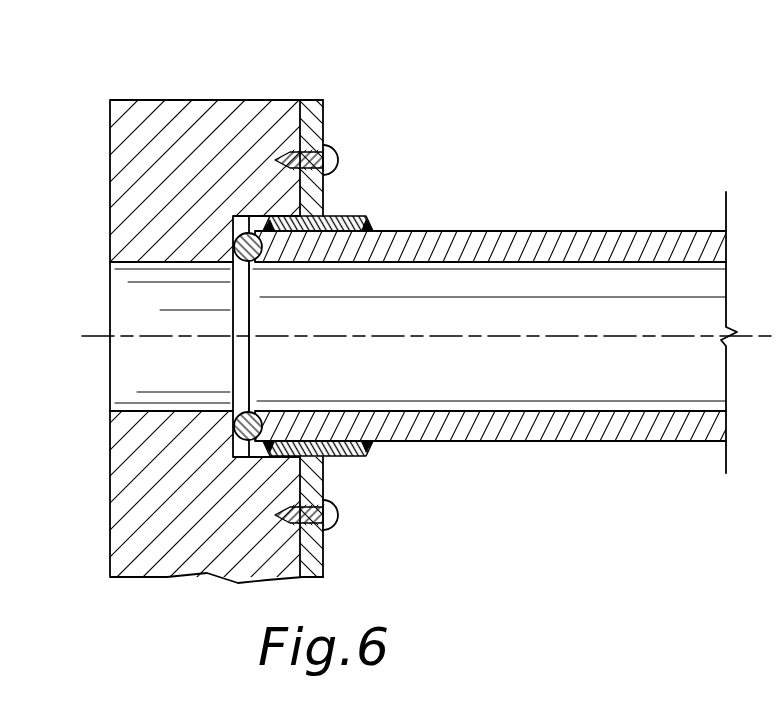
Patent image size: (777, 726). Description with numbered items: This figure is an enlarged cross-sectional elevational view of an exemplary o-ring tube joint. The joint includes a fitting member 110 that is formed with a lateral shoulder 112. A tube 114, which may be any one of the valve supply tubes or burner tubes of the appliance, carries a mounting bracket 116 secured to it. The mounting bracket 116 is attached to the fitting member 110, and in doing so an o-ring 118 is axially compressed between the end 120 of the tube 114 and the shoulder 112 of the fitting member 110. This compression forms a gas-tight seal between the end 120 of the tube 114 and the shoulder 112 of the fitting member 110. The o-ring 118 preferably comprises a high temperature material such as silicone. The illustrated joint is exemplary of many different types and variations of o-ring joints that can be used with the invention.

The fitting member 110 is at (173, 100).
The lateral shoulder 112 is at (250, 216).
The tube 114 is at (567, 231).
The mounting bracket 116 is at (325, 197).
The o-ring 118 is at (233, 247).
The end of the tube 120 is at (246, 260).